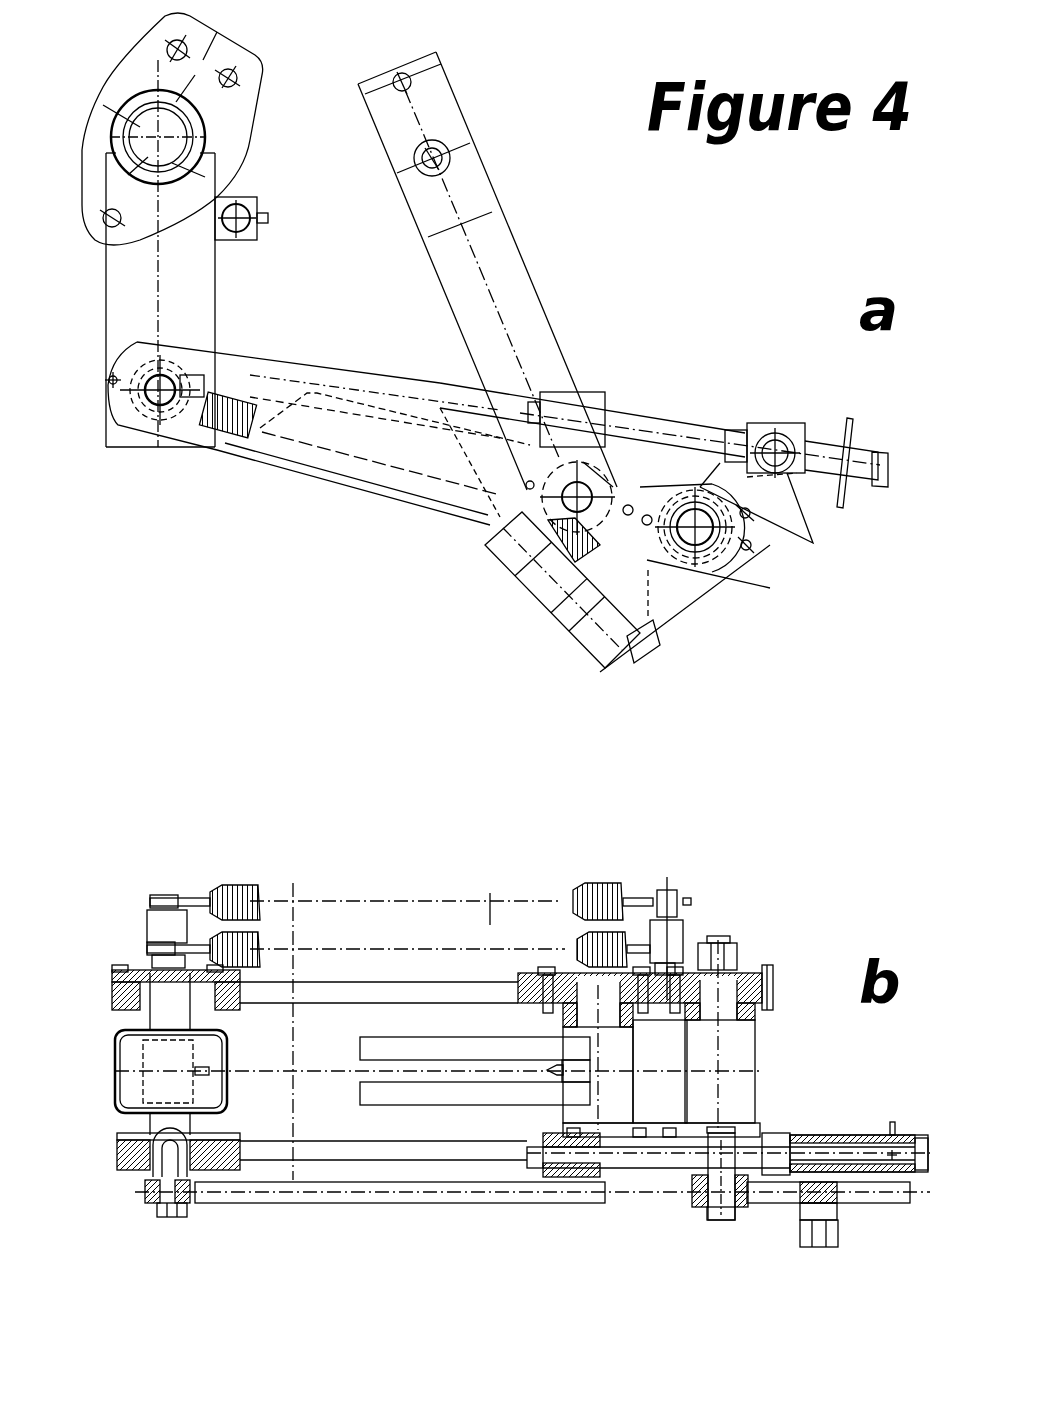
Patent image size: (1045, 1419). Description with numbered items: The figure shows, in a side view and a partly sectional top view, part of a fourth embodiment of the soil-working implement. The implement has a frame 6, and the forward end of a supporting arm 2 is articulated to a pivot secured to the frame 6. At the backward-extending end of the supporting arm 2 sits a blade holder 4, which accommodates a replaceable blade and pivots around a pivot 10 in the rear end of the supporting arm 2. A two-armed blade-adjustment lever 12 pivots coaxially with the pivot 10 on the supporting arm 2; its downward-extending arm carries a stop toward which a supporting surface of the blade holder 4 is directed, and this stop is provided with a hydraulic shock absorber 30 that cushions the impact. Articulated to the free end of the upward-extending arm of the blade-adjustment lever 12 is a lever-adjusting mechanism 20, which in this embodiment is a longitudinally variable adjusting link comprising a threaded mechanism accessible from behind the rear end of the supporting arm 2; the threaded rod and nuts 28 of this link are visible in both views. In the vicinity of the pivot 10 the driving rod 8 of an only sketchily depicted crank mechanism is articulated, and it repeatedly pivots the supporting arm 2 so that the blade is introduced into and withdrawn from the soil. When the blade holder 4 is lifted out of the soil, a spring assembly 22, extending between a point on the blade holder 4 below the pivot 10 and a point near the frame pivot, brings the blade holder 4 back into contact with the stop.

In FIG. 4b, the supporting arm 2 is at (320, 992).
In FIG. 4a, the blade holder 4 is at (665, 583).
In FIG. 4b, the frame 6 is at (222, 1050).
In FIG. 4a, the driving rod 8 is at (490, 237).
In FIG. 4a, the pivot 10 is at (667, 585).
In FIG. 4b, the pivot 10 is at (738, 1062).
In FIG. 4a, the blade-adjustment lever 12 is at (750, 525).
In FIG. 4a, the lever-adjusting mechanism 20 is at (704, 430).
In FIG. 4b, the lever-adjusting mechanism 20 is at (728, 1171).
In FIG. 4b, the spring assembly 22 is at (578, 912).
In FIG. 4a, the threaded adjusting rod 28 is at (603, 393).
In FIG. 4b, the threaded adjusting rod 28 is at (878, 1138).
In FIG. 4a, the shock absorber 30 is at (522, 570).